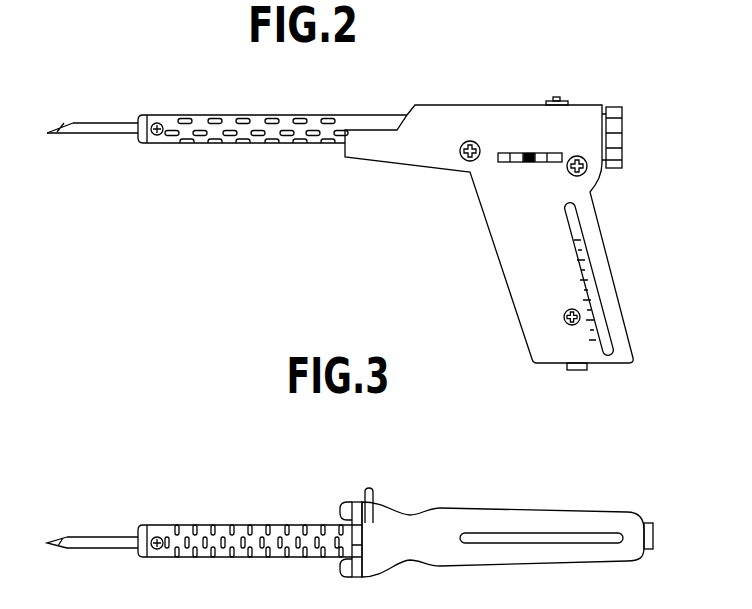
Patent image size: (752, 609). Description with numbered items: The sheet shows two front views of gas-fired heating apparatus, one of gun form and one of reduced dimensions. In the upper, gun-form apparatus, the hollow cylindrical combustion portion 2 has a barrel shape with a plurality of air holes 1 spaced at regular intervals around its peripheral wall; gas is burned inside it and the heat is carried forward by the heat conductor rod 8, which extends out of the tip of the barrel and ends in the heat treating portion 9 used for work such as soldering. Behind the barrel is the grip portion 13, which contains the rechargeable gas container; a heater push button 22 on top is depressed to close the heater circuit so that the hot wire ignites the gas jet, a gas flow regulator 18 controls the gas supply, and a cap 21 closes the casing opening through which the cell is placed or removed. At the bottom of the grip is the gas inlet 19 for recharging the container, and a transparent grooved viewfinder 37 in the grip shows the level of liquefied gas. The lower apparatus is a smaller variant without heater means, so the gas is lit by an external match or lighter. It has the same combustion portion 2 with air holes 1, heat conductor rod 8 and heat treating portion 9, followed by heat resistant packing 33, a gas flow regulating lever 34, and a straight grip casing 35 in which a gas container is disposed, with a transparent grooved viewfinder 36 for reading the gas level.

In FIG. 2, the air holes 1 is at (300, 114).
In FIG. 3, the air holes 1 is at (253, 528).
In FIG. 2, the combustion portion 2 is at (261, 114).
In FIG. 3, the combustion portion 2 is at (259, 528).
In FIG. 2, the heat conductor rod 8 is at (103, 123).
In FIG. 3, the heat conductor rod 8 is at (117, 549).
In FIG. 2, the heat treating portion 9 is at (63, 135).
In FIG. 3, the heat treating portion 9 is at (62, 549).
In FIG. 2, the grip portion 13 is at (515, 265).
In FIG. 2, the gas flow regulator 18 is at (523, 164).
In FIG. 2, the gas inlet 19 is at (586, 369).
In FIG. 2, the cap 21 is at (622, 140).
In FIG. 2, the heater push button 22 is at (557, 97).
In FIG. 3, the heat resistant packing 33 is at (352, 503).
In FIG. 3, the gas flow regulating lever 34 is at (374, 491).
In FIG. 3, the grip casing 35 is at (472, 513).
In FIG. 3, the transparent grooved viewfinder 36 is at (530, 532).
In FIG. 2, the transparent grooved viewfinder 37 is at (591, 262).